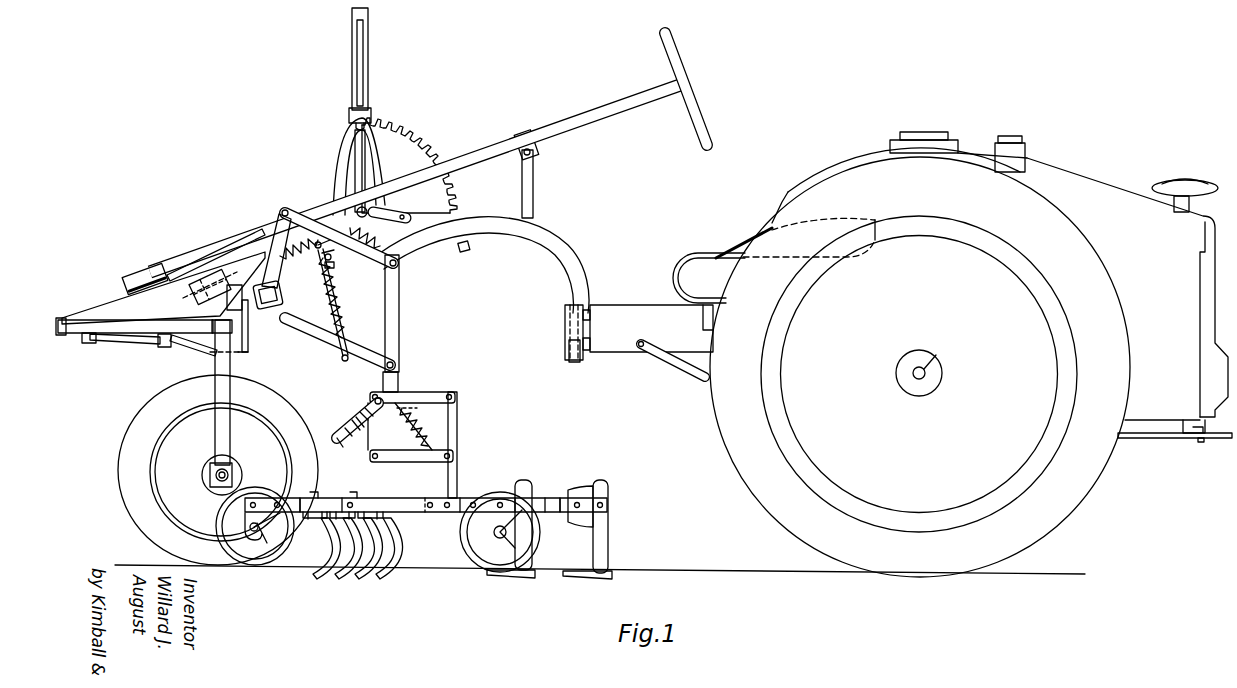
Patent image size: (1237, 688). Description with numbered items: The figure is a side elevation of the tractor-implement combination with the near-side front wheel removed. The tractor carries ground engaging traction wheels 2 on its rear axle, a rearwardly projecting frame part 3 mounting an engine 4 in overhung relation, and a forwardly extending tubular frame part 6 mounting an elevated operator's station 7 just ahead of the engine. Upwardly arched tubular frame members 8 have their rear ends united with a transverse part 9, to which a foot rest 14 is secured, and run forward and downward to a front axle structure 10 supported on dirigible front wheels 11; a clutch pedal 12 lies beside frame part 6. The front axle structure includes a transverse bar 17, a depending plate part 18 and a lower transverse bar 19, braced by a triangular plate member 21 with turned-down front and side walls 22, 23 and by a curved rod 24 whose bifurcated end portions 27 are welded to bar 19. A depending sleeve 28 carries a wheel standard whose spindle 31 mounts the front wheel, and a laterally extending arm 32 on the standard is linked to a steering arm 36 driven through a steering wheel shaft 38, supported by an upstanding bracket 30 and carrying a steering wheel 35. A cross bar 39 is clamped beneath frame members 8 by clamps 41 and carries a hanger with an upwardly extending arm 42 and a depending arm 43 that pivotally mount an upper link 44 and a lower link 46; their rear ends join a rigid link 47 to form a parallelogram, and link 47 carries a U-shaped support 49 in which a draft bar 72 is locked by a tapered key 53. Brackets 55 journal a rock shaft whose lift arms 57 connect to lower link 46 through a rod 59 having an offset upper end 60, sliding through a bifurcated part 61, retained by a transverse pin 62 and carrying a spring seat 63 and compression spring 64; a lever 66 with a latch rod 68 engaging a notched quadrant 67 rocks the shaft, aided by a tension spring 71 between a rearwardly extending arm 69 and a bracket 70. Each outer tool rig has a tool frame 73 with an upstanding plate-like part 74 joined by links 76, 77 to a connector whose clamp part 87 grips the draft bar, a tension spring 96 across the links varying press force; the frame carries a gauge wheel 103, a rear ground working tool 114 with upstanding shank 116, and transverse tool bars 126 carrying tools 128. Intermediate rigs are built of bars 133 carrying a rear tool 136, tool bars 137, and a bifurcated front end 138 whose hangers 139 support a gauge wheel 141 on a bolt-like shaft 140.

The traction wheels 2 is at (1082, 506).
The rearwardly projecting frame part 3 is at (1148, 440).
The engine 4 is at (1133, 190).
The forwardly extending tubular frame part 6 is at (633, 310).
The operator's seat or station 7 is at (748, 256).
The upwardly arched tubular frame members 8 is at (576, 260).
The transverse part 9 is at (568, 352).
The transverse front axle structure 10 is at (274, 360).
The dirigible front wheels 11 is at (130, 430).
The clutch pedal 12 is at (673, 362).
The foot rest 14 is at (565, 318).
The rigid transverse bar 17 is at (226, 302).
The rigid plate part 18 is at (234, 326).
The rigid transverse bar 19 is at (245, 355).
The triangular shaped plate member 21 is at (104, 308).
The front wall 22 is at (72, 316).
The side walls 23 is at (212, 286).
The curved rod 24 is at (130, 344).
The bifurcated end portions 27 is at (206, 351).
The depending vertical bearing or sleeve 28 is at (215, 390).
The upstanding bracket 30 is at (537, 175).
The spindle 31 is at (212, 478).
The laterally extending arm 32 is at (166, 347).
The steering wheel 35 is at (704, 118).
The steering arm 36 is at (90, 343).
The steering wheel shaft or tube 38 is at (567, 121).
The transverse frame bar or cross bar 39 is at (283, 291).
The clamps 41 is at (256, 258).
The upwardly extending arm 42 is at (280, 224).
The depending arm 43 is at (290, 316).
The upper fabricated link 44 is at (300, 203).
The lower fabricated link 46 is at (361, 368).
The rigid link 47 is at (400, 322).
The U-shaped part or support 49 is at (350, 425).
The tapered key 53 is at (350, 442).
The upwardly extending brackets 55 is at (382, 245).
The crank or lift arms 57 is at (368, 211).
The rod 59 is at (337, 291).
The upper end of rod 60 is at (300, 263).
The bifurcated part 61 is at (343, 325).
The transverse pin 62 is at (343, 360).
The spring seat 63 is at (331, 259).
The compression spring 64 is at (346, 302).
The lever 66 is at (369, 48).
The notched quadrant 67 is at (418, 139).
The quadrant engaging latch rod 68 is at (354, 82).
The rearwardly extending arm 69 is at (412, 217).
The bracket 70 is at (186, 298).
The tension spring 71 is at (316, 245).
The draft bar 72 is at (372, 426).
The elongated tool frame 73 is at (560, 492).
The rigid upstanding plate-like part 74 is at (458, 432).
The upper fabricated link 76 is at (418, 392).
The lower fabricated link 77 is at (412, 462).
The clamp part 87 is at (374, 401).
The tension spring 96 is at (423, 437).
The gauge wheel 103 is at (540, 540).
The ground working tool 114 is at (600, 579).
The upstanding shank 116 is at (609, 543).
The transverse tool bars 126 is at (420, 508).
The ground working tool 128 is at (404, 552).
The bars of bar stock 133 is at (340, 498).
The ground working tool 136 is at (510, 578).
The tool bars 137 is at (320, 524).
The bifurcated front end 138 is at (276, 497).
The depending hangers 139 is at (260, 535).
The bolt-like shaft 140 is at (250, 522).
The gauge wheel 141 is at (222, 546).